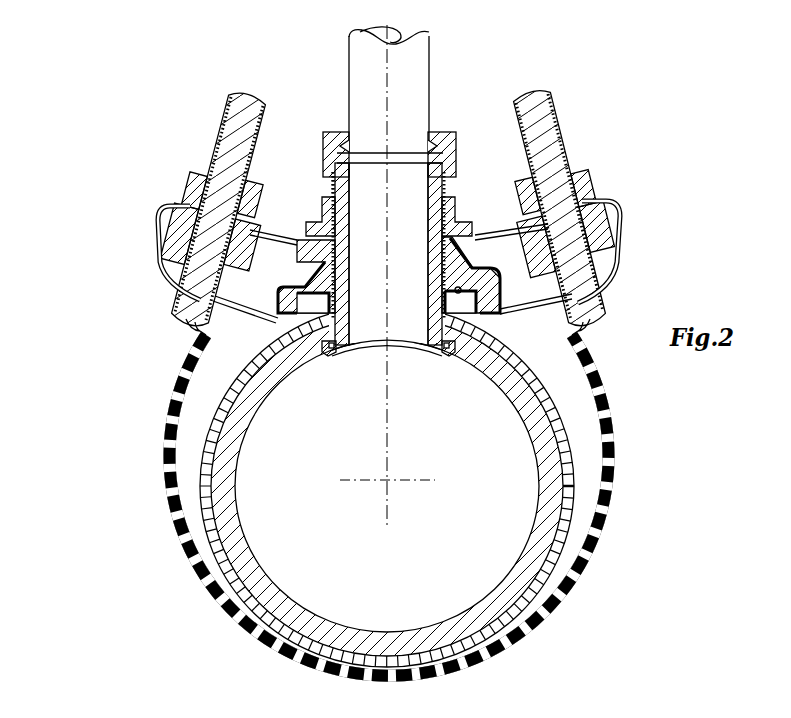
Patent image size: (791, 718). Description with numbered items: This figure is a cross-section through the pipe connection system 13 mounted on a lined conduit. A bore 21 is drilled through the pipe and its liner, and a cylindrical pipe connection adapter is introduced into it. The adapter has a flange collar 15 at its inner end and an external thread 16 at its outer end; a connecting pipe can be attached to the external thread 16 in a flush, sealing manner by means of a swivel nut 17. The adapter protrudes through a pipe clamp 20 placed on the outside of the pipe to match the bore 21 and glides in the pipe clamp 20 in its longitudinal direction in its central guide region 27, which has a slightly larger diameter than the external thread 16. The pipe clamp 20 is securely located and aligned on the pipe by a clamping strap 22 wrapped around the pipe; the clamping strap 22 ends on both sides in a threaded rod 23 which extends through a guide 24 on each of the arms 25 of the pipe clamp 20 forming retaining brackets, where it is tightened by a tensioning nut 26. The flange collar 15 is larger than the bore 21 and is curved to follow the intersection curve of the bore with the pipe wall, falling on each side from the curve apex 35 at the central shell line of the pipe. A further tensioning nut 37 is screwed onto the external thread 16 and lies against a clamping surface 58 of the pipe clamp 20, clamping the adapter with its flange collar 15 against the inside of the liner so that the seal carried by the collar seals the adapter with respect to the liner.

The pipe connection system 13 is at (178, 150).
The flange collar 15 is at (441, 357).
The external thread 16 is at (336, 186).
The swivel nut 17 is at (327, 144).
The pipe clamp 20 is at (462, 240).
The bore 21 is at (320, 353).
The clamping strap 22 is at (168, 404).
The threaded rod 23 is at (556, 122).
The guide 24 is at (620, 218).
The arm 25 is at (532, 295).
The tensioning nut 26 is at (584, 174).
The central guide region 27 is at (307, 272).
The curve apex 35 is at (392, 338).
The tensioning nut 37 is at (457, 200).
The clamping surface 58 is at (318, 213).